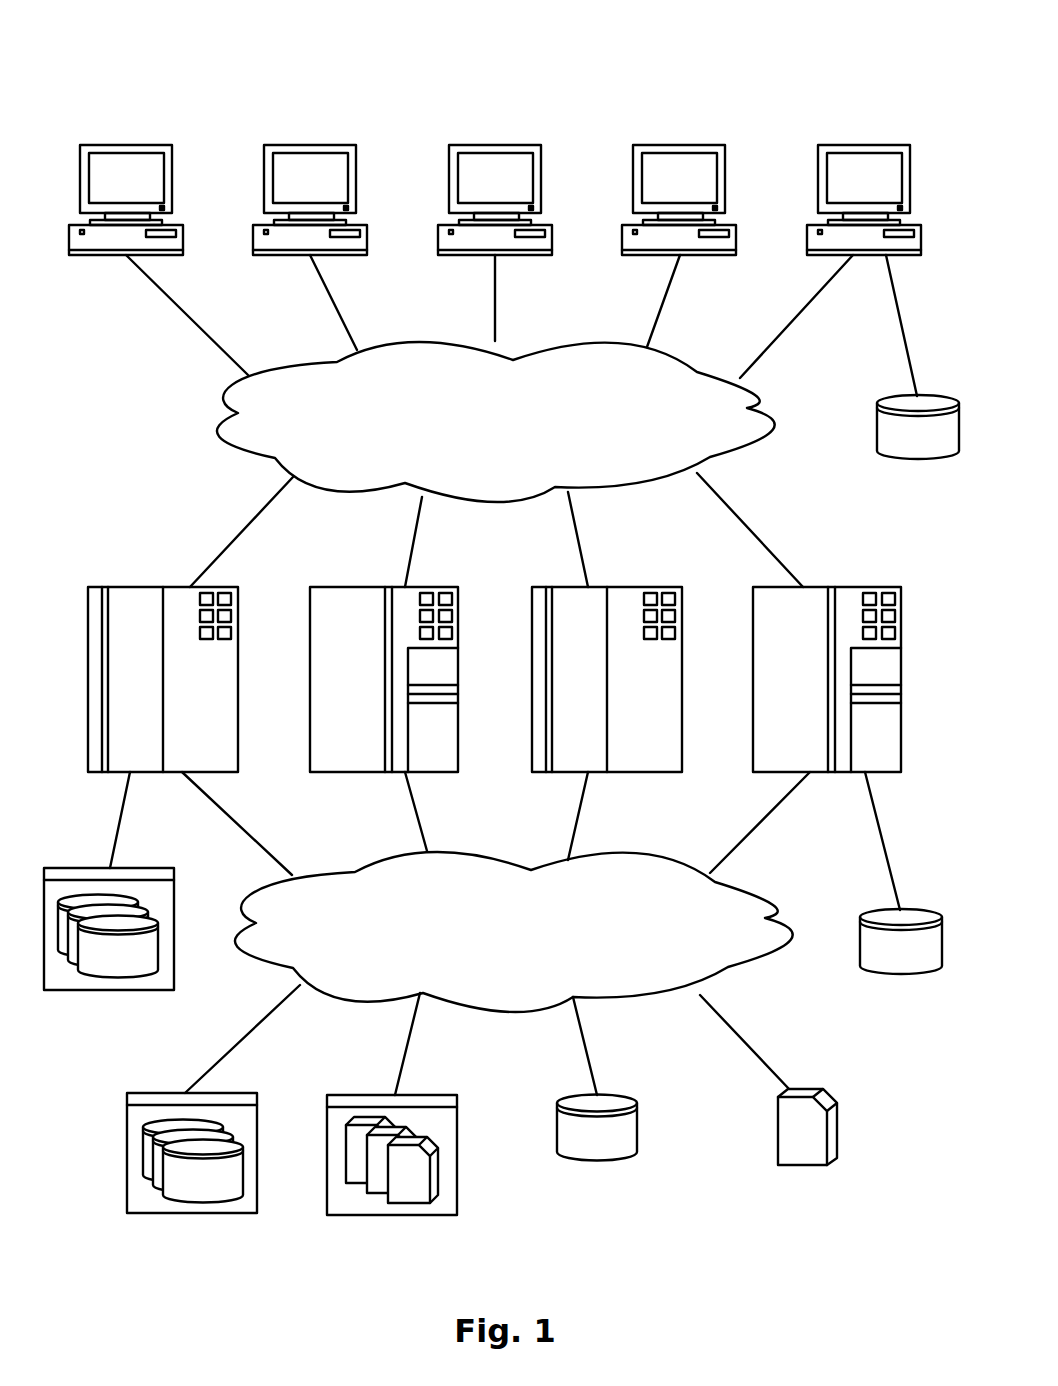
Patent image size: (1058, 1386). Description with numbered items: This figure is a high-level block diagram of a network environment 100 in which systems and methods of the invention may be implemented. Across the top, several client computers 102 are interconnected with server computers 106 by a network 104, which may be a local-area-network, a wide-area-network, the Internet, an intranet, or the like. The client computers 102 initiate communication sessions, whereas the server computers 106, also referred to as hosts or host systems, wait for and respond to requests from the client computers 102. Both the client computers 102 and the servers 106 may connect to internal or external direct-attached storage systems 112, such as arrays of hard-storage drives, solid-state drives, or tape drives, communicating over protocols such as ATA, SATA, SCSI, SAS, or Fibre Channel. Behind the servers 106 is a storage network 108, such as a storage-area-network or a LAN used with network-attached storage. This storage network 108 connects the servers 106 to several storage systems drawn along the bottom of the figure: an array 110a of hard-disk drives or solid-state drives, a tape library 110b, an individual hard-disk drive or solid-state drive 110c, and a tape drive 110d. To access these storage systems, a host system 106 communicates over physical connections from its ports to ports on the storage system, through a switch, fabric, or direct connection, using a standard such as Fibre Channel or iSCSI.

The network environment 100 is at (203, 71).
The client computer 102 is at (495, 200).
The network 104 is at (480, 448).
The server computer 106 is at (494, 679).
The storage network 108 is at (514, 932).
The array of hard-disk drives or solid-state drives 110a is at (188, 1213).
The tape library 110b is at (393, 1215).
The individual hard-disk drive or solid-state drive 110c is at (595, 1157).
The tape drive 110d is at (803, 1165).
The direct-attached storage system 112 is at (112, 990).